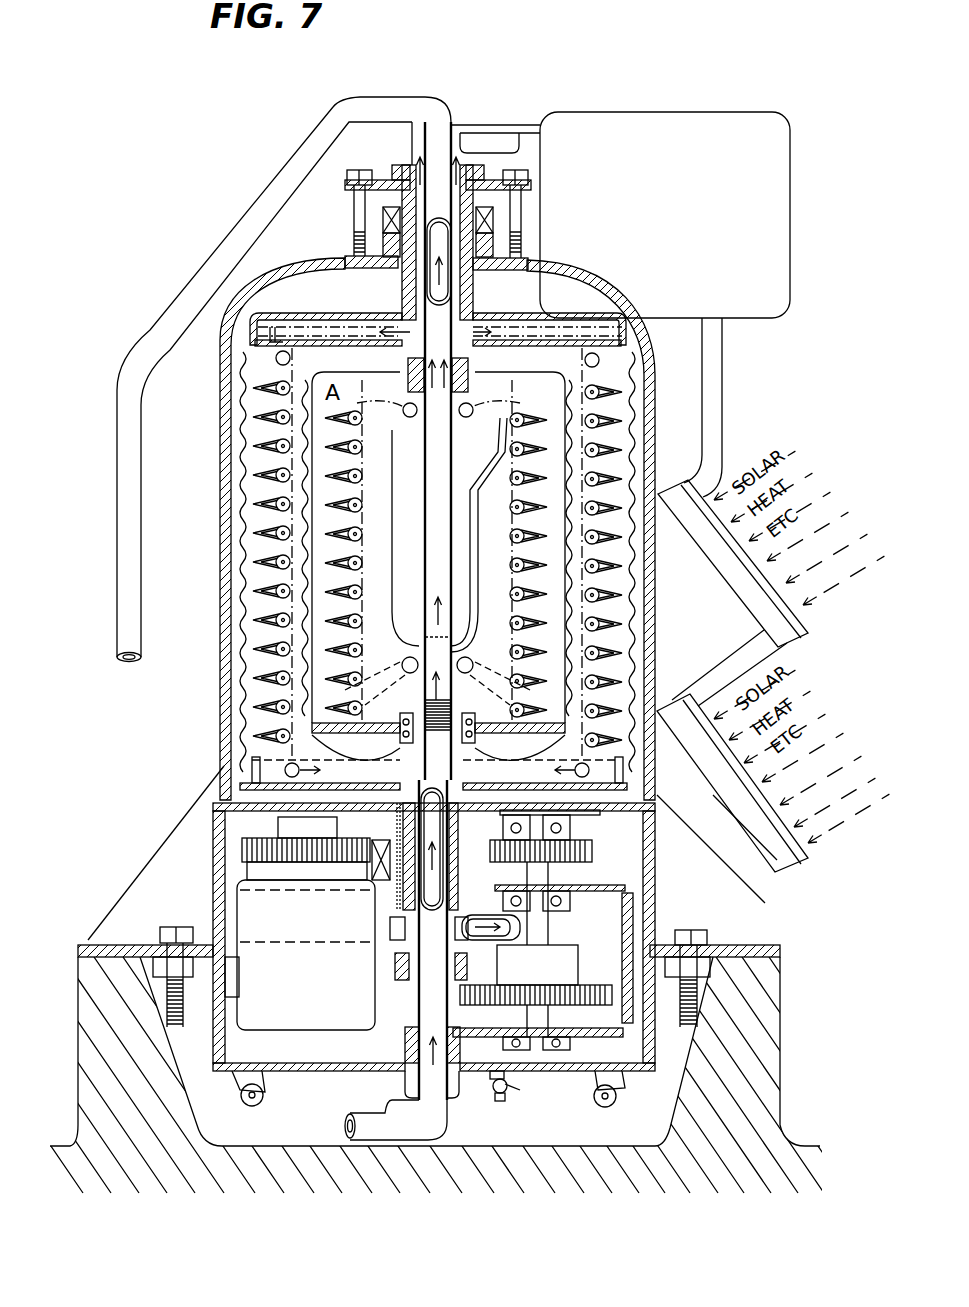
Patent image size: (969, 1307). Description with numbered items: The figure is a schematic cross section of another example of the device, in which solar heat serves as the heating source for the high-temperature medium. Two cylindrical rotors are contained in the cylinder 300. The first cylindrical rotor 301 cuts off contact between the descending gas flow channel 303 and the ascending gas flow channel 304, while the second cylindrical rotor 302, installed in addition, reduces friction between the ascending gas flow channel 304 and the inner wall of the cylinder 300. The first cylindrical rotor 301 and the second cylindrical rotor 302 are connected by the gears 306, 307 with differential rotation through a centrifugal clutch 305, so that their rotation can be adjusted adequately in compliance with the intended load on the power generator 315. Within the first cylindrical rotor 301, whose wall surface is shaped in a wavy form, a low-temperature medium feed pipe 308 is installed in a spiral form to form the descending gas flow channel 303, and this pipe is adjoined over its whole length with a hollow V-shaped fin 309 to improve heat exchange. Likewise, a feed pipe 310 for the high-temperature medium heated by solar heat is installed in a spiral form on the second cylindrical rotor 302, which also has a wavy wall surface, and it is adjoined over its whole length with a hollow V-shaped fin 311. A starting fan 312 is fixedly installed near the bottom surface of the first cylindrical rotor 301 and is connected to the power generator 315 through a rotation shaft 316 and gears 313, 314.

The cylinder 300 is at (232, 297).
The first cylindrical rotor 301 is at (563, 383).
The second cylindrical rotor 302 is at (257, 553).
The descending gas flow channel 303 is at (535, 432).
The ascending gas flow channel 304 is at (257, 433).
The centrifugal clutch 305 is at (567, 973).
The gear 306 is at (762, 903).
The gear 307 is at (700, 985).
The low-temperature medium feed pipe 308 is at (535, 462).
The V-shaped fin 309 is at (535, 505).
The feed pipe for high-temperature medium 310 is at (270, 655).
The V-shaped fin 311 is at (256, 710).
The starting fan 312 is at (347, 730).
The gear 313 is at (377, 868).
The gear 314 is at (265, 851).
The power generator 315 is at (253, 1005).
The rotation shaft 316 is at (340, 788).